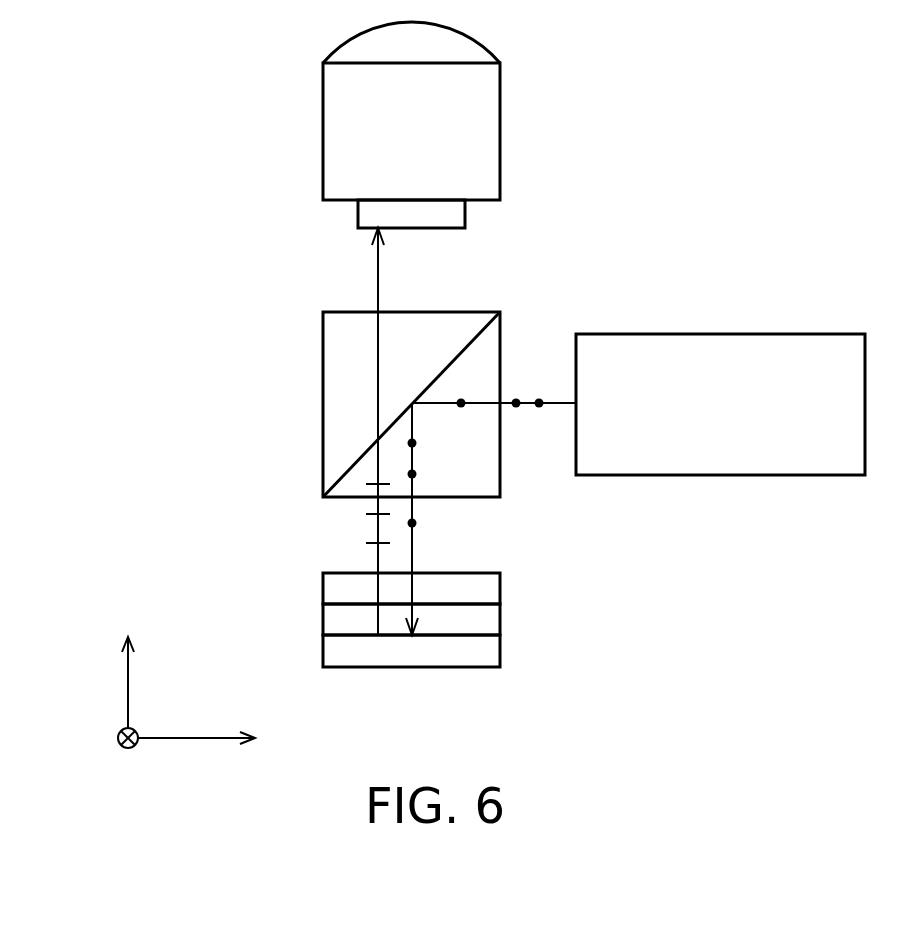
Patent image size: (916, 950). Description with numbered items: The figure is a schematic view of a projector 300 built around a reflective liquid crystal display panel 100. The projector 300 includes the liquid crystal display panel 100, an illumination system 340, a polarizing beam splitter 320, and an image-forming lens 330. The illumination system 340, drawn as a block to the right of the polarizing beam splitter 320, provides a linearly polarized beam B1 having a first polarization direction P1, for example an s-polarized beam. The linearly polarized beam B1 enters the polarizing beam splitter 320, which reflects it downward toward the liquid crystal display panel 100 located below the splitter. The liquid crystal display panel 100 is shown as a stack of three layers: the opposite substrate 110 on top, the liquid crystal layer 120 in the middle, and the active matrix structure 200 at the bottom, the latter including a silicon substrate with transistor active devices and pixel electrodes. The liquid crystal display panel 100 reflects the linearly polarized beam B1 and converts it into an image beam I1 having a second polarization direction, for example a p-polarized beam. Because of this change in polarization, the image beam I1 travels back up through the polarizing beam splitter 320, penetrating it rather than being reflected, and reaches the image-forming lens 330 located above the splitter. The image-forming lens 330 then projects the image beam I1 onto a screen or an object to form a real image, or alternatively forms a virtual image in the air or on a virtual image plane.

The projector 300 is at (506, 408).
The image-forming lens 330 is at (483, 133).
The polarizing beam splitter 320 is at (355, 460).
The illumination system 340 is at (743, 447).
The liquid crystal display panel 100 is at (498, 684).
The opposite substrate 110 is at (485, 585).
The liquid crystal layer 120 is at (483, 617).
The active matrix structure 200 is at (432, 689).
The first polarization direction P1 is at (516, 403).
The linearly polarized beam B1 is at (410, 548).
The image beam I1 is at (378, 275).